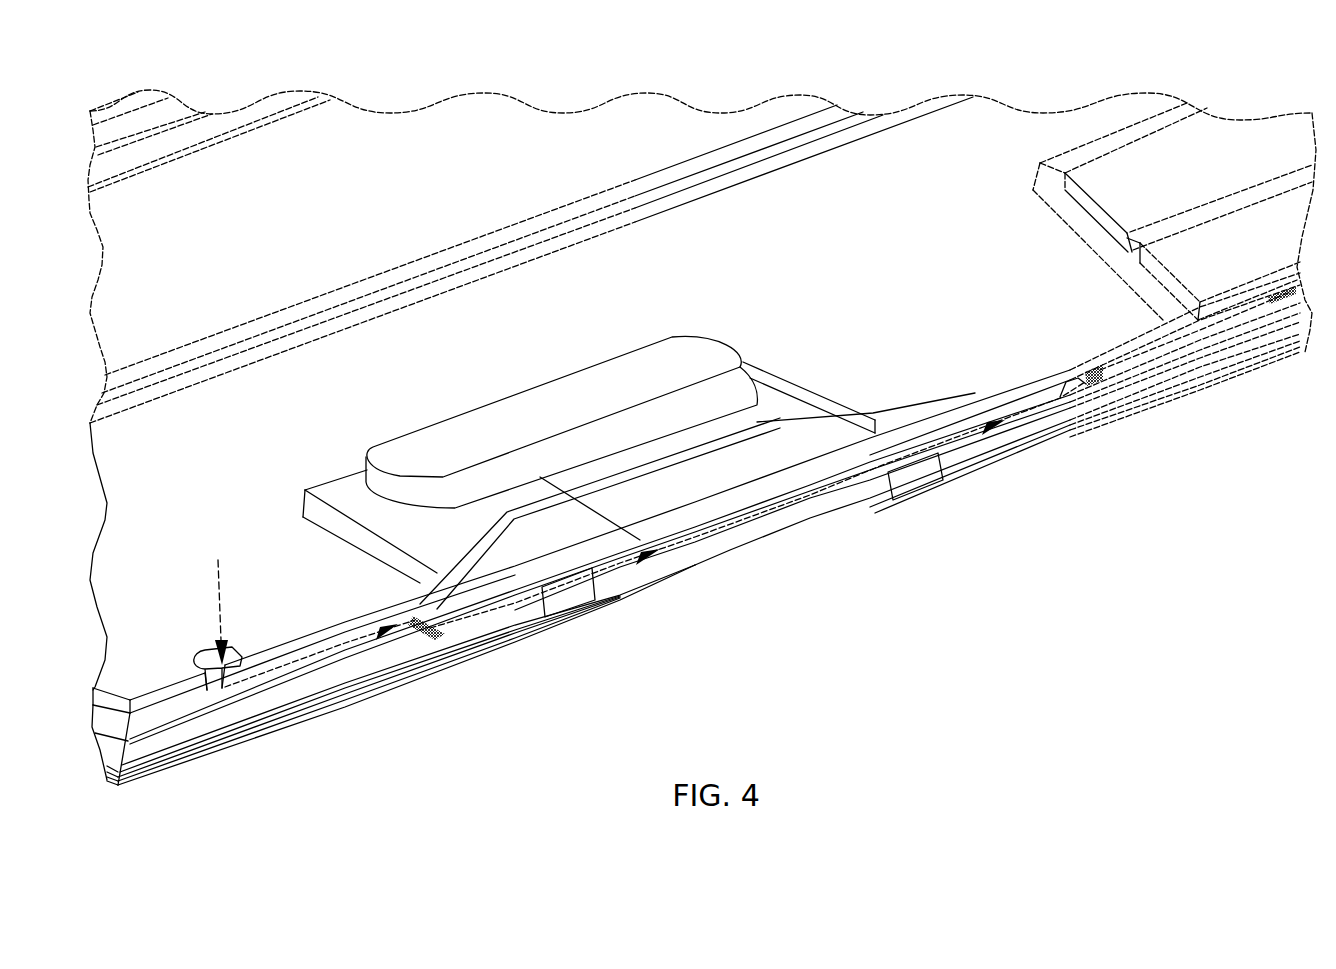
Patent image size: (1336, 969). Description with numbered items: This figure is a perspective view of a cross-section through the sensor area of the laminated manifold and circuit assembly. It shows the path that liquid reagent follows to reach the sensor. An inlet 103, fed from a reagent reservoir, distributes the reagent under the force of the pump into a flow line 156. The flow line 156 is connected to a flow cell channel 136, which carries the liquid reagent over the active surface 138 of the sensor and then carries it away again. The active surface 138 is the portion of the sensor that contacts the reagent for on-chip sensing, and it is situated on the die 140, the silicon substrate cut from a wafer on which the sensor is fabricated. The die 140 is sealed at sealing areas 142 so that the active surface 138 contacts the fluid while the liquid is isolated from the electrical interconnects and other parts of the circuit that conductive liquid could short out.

The inlet 103 is at (198, 635).
The flow cell channel 136 is at (503, 543).
The active surface 138 is at (777, 440).
The die 140 is at (753, 538).
The sealing area 142 is at (668, 322).
The flow line 156 is at (299, 665).